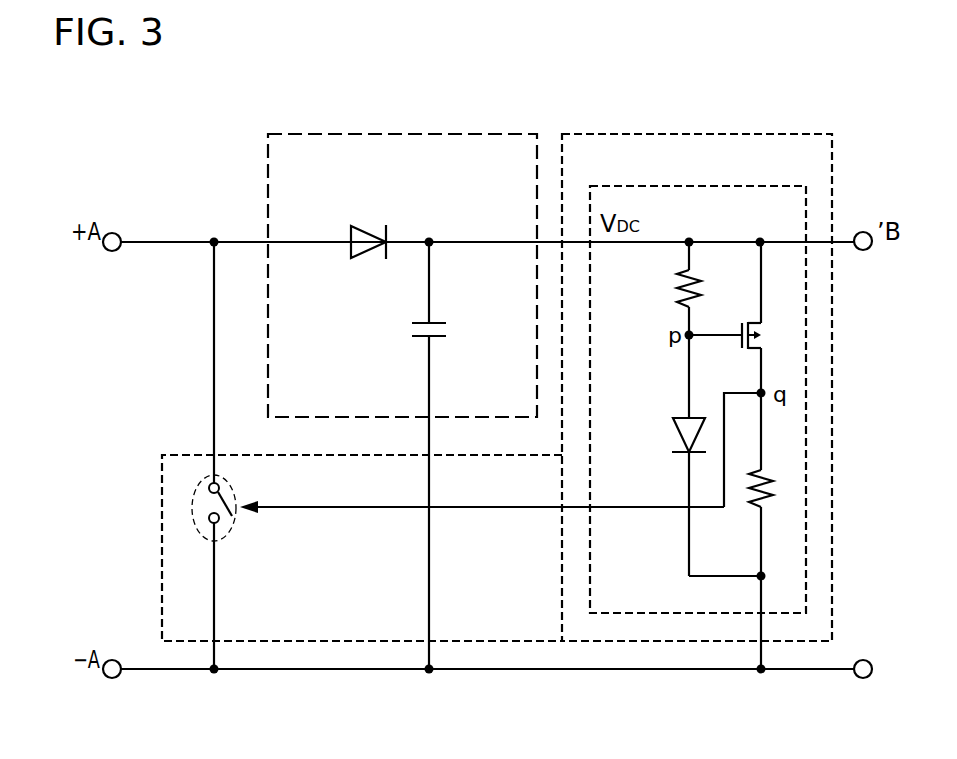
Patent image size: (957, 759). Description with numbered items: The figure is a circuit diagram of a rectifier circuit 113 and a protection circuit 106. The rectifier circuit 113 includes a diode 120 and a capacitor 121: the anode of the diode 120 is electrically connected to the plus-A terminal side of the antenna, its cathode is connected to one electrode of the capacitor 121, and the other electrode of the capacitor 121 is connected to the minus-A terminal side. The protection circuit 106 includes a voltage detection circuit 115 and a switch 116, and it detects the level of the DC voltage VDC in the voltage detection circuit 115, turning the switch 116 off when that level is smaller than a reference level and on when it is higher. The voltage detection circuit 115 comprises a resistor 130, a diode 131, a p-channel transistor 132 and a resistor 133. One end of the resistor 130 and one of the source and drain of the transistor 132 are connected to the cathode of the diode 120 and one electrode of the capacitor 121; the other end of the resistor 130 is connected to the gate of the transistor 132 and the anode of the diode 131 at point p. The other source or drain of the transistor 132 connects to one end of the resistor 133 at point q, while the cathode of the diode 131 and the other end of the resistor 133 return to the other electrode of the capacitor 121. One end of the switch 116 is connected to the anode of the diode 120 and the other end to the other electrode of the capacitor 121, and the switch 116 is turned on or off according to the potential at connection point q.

The protection circuit 106 is at (696, 133).
The rectifier circuit 113 is at (400, 133).
The voltage detection circuit 115 is at (700, 186).
The switch 116 is at (234, 517).
The diode 120 is at (368, 225).
The capacitor 121 is at (407, 328).
The resistor 130 is at (665, 288).
The diode 131 is at (666, 435).
The p-channel transistor 132 is at (740, 321).
The resistor 133 is at (776, 504).